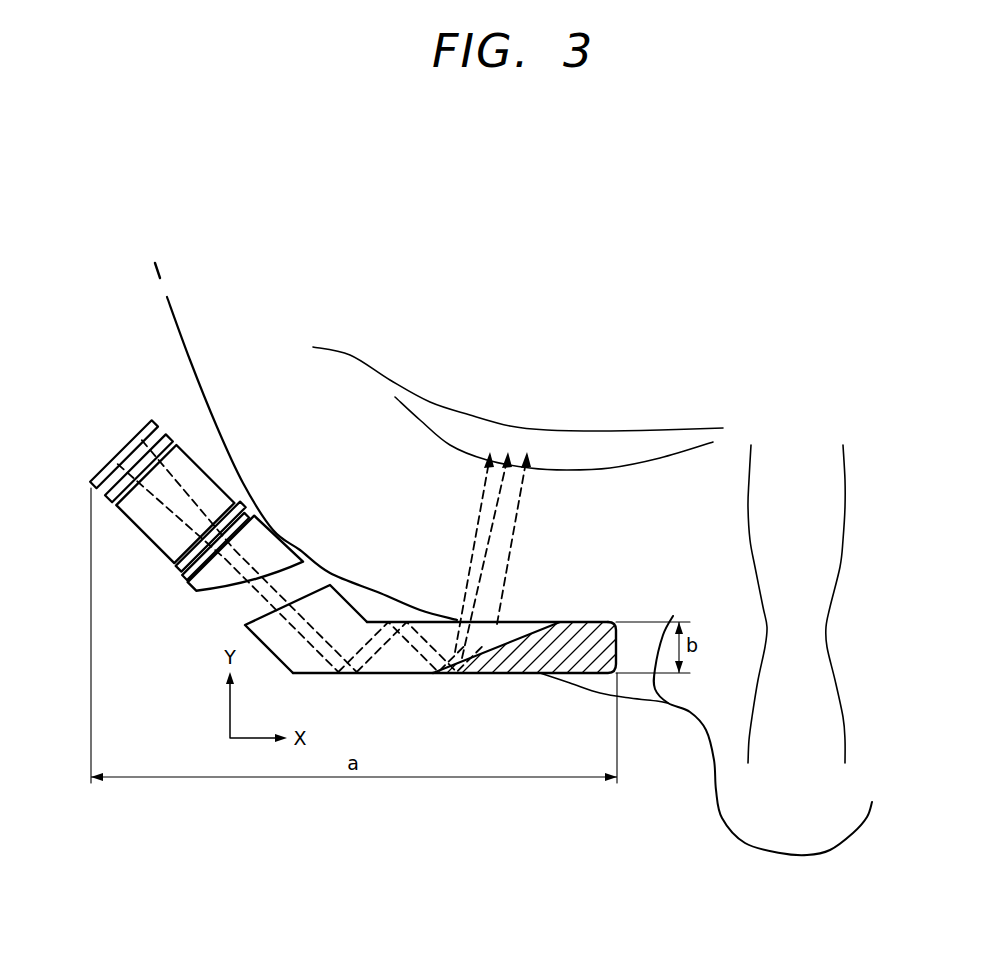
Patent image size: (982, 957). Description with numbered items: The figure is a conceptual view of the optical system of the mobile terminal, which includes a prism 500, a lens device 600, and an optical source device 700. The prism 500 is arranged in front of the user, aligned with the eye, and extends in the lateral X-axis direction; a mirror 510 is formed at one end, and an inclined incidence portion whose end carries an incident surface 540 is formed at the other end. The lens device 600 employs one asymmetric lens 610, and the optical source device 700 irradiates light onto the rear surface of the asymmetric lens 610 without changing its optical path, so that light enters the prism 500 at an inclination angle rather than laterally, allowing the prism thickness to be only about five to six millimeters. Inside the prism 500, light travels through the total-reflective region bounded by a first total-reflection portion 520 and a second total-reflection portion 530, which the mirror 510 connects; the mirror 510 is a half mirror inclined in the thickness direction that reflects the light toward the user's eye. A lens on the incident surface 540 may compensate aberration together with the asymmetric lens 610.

The prism 500 is at (455, 639).
The mirror 510 is at (433, 675).
The first total-reflection portion 520 is at (428, 676).
The second total-reflection portion 530 is at (613, 617).
The incident surface 540 is at (323, 590).
The lens device 600 is at (220, 581).
The asymmetric lens 610 is at (272, 537).
The optical source device 700 is at (175, 580).